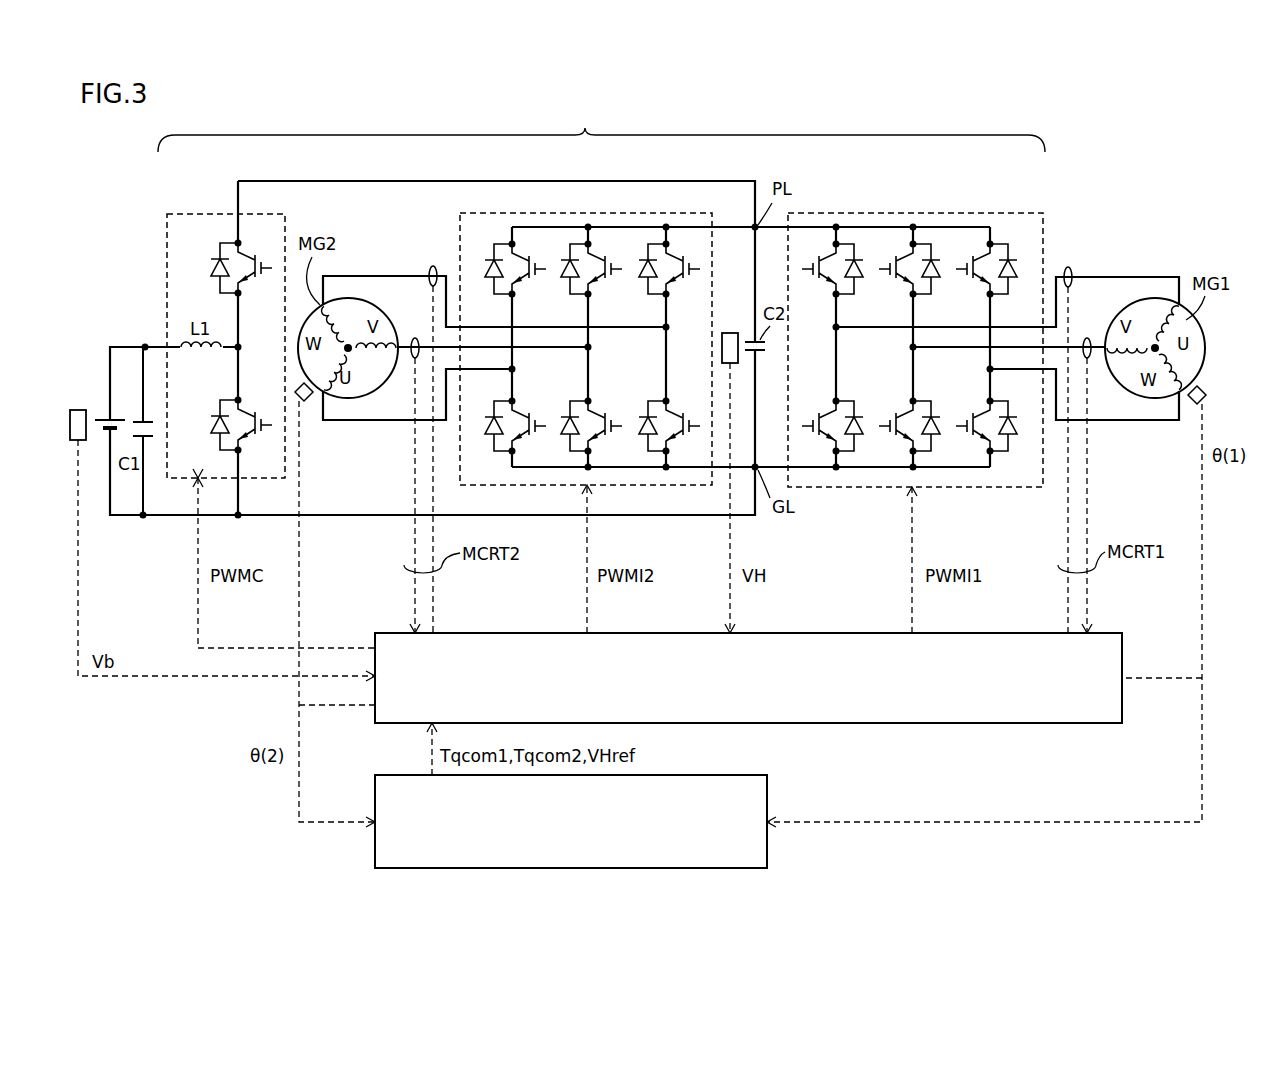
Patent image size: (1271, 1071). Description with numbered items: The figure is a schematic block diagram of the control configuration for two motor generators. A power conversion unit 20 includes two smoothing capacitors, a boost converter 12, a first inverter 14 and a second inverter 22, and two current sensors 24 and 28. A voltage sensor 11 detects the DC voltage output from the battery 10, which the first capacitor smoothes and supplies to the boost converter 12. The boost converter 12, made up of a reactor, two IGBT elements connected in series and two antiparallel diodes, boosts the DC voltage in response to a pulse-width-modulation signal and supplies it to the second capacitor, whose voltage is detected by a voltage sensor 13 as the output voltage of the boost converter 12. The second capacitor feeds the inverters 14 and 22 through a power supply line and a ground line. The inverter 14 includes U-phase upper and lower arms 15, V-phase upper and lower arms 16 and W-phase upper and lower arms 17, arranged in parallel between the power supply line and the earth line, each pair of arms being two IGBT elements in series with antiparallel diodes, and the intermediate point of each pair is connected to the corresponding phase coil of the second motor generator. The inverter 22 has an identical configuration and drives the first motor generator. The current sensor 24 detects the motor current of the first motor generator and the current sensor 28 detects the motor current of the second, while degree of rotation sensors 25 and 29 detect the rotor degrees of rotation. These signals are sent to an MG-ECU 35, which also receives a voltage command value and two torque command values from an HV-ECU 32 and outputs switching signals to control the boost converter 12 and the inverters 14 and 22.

The battery 10 is at (113, 417).
The voltage sensor 11 is at (78, 410).
The boost converter 12 is at (188, 214).
The voltage sensor 13 is at (730, 333).
The inverter 14 is at (603, 213).
The U-phase upper and lower arms 15 is at (517, 377).
The V-phase upper and lower arms 16 is at (602, 356).
The W-phase upper and lower arms 17 is at (678, 336).
The power conversion unit 20 is at (601, 128).
The inverter 22 is at (925, 213).
The current sensor 24 is at (1068, 267).
The degree of rotation sensor 25 is at (1207, 398).
The current sensor 28 is at (434, 266).
The degree of rotation sensor 29 is at (310, 400).
The HV-ECU 32 is at (767, 786).
The MG-ECU 35 is at (1122, 700).